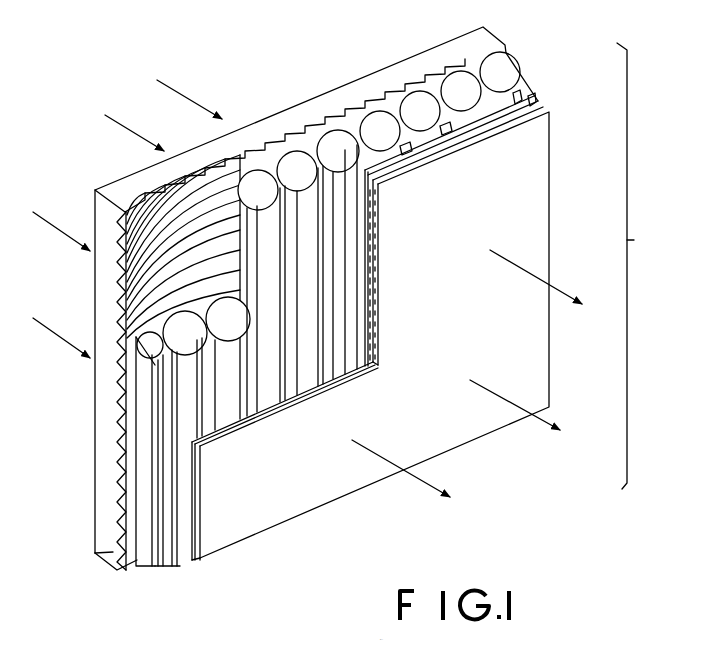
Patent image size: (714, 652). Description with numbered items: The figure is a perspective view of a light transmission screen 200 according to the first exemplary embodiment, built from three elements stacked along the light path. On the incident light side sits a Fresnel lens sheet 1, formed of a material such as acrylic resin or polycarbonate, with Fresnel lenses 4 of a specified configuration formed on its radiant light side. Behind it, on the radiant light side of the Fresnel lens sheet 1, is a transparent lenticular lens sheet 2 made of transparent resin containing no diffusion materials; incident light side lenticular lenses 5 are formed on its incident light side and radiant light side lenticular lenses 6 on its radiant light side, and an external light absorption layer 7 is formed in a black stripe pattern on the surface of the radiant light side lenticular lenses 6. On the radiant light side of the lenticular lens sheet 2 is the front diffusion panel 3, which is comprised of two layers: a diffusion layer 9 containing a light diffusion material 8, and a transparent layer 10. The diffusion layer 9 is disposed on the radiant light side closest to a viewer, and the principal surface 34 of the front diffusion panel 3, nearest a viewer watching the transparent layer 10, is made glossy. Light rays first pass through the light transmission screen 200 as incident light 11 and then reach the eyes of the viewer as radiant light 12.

The Fresnel lens sheet 1 is at (105, 468).
The transparent lenticular lens sheet 2 is at (131, 585).
The front diffusion panel 3 is at (223, 620).
The Fresnel lenses 4 is at (112, 543).
The incident light side lenticular lenses 5 is at (510, 62).
The radiant light side lenticular lenses 6 is at (513, 103).
The external light absorption layer 7 is at (536, 99).
The light diffusion material 8 is at (370, 276).
The diffusion layer 9 is at (372, 300).
The transparent layer 10 is at (380, 330).
The incident light 11 is at (307, 288).
The radiant light 12 is at (390, 305).
The principal surface 34 is at (243, 533).
The light transmission screen 200 is at (643, 266).